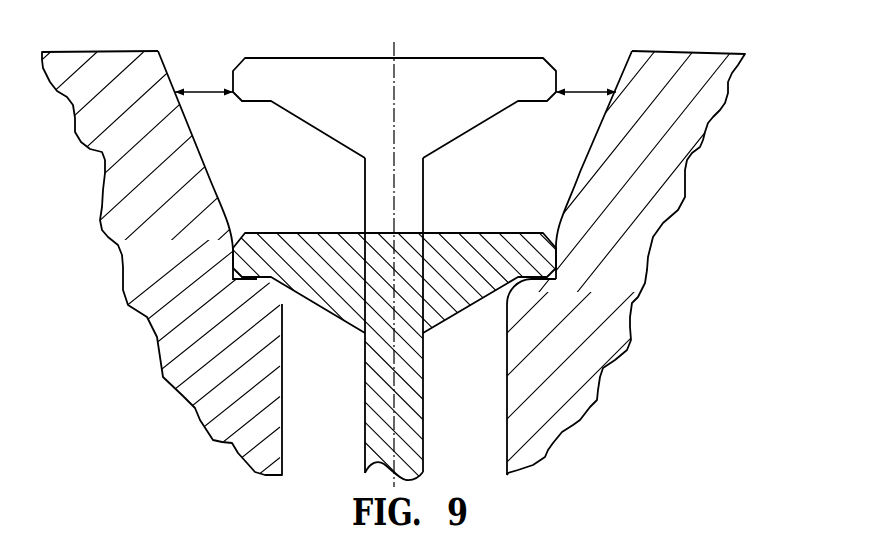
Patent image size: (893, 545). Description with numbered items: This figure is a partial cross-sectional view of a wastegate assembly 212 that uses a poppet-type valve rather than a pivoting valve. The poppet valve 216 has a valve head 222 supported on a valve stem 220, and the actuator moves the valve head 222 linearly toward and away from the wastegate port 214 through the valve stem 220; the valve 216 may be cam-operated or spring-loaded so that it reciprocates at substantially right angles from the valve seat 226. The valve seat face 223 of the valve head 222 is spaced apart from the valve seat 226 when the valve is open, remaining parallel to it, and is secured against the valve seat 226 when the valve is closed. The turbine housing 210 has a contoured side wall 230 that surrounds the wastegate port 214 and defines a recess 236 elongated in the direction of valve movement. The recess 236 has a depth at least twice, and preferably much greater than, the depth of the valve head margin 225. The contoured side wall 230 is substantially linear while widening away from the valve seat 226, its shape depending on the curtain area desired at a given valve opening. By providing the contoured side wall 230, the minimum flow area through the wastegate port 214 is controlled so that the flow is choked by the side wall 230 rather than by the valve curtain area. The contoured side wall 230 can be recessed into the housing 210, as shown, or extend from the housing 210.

The housing 210 is at (708, 72).
The wastegate assembly 212 is at (254, 230).
The wastegate port 214 is at (507, 296).
The poppet valve 216 is at (533, 233).
The valve stem 220 is at (413, 438).
The valve head 222 is at (523, 72).
The valve seat face 223 is at (525, 103).
The valve head margin 225 is at (236, 259).
The valve seat 226 is at (558, 270).
The contoured side wall 230 is at (185, 110).
The recess 236 is at (268, 160).